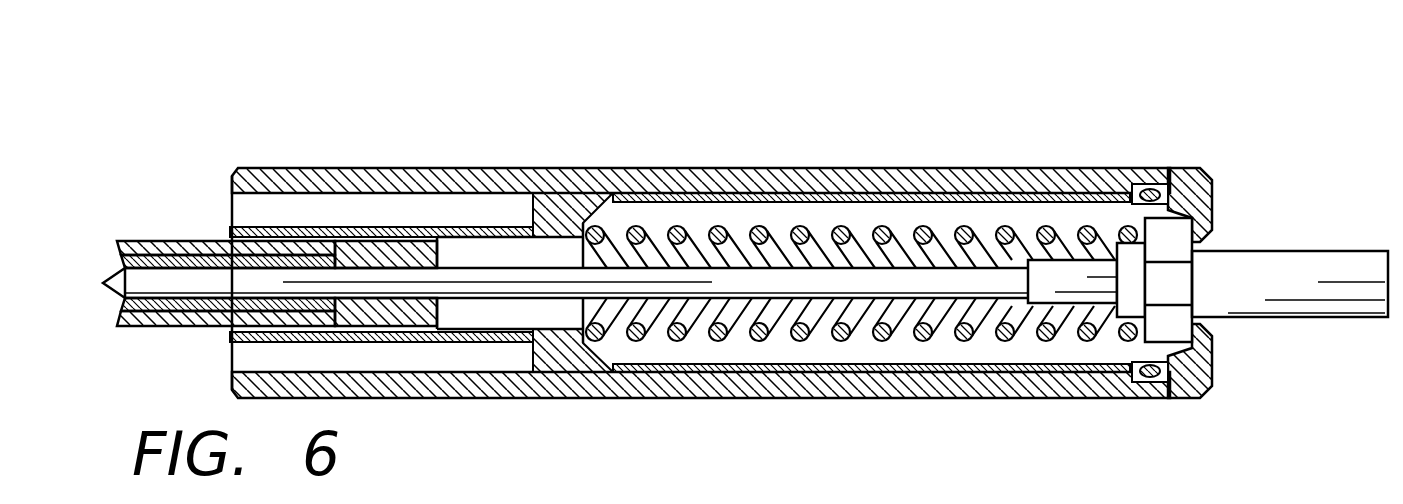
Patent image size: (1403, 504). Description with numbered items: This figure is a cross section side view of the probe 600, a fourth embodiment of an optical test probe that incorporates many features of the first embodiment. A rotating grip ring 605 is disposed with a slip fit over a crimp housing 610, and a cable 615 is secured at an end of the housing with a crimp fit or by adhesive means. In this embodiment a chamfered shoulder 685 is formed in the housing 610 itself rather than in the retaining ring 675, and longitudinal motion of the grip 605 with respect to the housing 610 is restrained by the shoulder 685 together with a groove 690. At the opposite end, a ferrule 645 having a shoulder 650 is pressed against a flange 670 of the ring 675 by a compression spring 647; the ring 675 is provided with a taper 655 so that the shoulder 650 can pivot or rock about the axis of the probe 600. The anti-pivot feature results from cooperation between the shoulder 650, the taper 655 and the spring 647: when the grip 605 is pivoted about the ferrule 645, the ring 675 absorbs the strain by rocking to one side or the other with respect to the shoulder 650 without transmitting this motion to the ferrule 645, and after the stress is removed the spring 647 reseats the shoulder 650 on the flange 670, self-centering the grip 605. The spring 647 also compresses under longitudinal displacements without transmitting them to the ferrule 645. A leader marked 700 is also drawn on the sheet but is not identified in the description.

The probe 600 is at (552, 158).
The rotating grip ring 605 is at (357, 170).
The crimp housing 610 is at (699, 204).
The cable 615 is at (160, 230).
The ferrule 645 is at (1350, 258).
The compression spring 647 is at (772, 342).
The shoulder 650 is at (1153, 340).
The taper 655 is at (1205, 348).
The flange 670 is at (1207, 242).
The retaining ring 675 is at (1208, 374).
The chamfered shoulder 685 is at (1166, 172).
The groove 690 is at (1112, 178).
The mating connector 700 is at (668, 503).